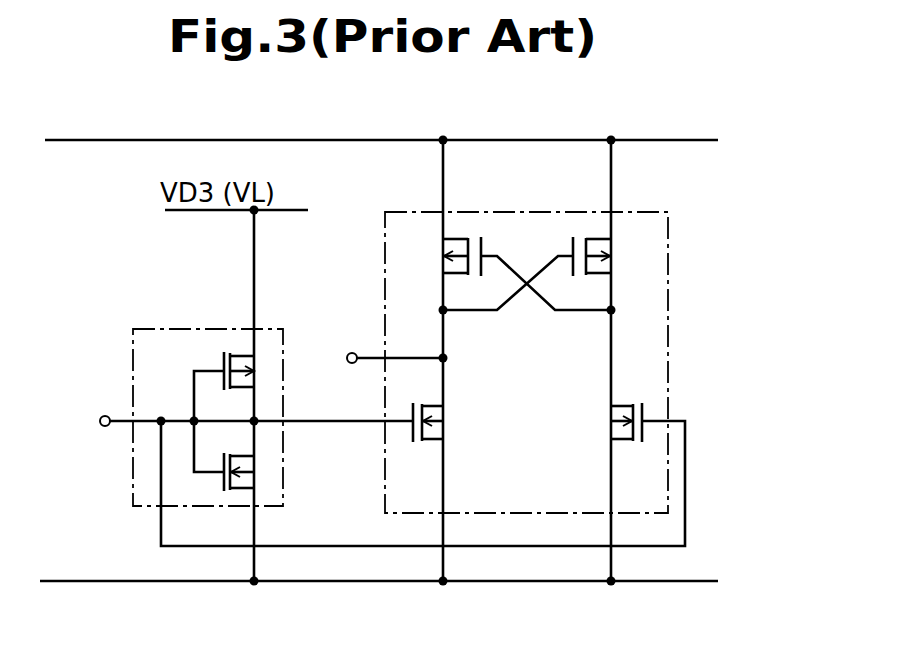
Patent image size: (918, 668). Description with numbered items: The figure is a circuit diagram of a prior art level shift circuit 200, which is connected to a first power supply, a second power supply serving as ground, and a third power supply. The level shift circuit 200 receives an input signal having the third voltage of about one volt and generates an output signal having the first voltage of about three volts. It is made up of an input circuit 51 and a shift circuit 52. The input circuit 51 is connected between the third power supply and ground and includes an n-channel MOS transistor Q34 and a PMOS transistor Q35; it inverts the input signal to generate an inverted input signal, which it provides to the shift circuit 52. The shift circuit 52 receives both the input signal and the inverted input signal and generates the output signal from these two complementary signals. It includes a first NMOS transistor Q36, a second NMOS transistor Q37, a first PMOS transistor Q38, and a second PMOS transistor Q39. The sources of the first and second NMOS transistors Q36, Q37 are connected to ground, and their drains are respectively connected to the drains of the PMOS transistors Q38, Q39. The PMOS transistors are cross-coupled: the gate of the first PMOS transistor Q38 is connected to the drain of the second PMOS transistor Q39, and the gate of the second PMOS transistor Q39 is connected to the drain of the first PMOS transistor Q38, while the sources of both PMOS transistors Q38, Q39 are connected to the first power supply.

The level shift circuit 200 is at (732, 133).
The input circuit 51 is at (163, 328).
The shift circuit 52 is at (669, 316).
The n-channel MOS transistor Q34 is at (224, 490).
The PMOS transistor Q35 is at (224, 360).
The first NMOS transistor Q36 is at (413, 442).
The second NMOS transistor Q37 is at (642, 442).
The first PMOS transistor Q38 is at (482, 237).
The second PMOS transistor Q39 is at (573, 237).